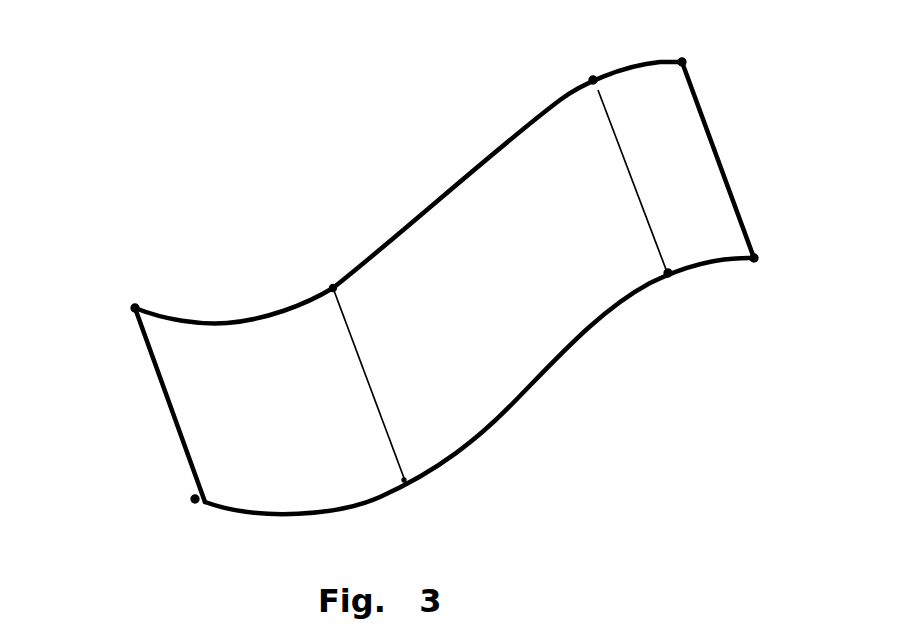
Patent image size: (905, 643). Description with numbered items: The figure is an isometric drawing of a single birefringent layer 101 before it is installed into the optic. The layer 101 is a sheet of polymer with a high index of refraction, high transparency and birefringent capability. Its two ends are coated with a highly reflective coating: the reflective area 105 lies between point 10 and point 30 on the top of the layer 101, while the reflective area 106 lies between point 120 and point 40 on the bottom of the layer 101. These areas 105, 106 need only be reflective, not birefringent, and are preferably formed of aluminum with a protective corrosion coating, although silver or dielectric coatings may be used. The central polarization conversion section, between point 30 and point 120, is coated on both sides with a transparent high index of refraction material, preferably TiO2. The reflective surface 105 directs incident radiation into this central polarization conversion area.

The point 10 is at (128, 305).
The point 40 is at (690, 60).
The point 30 is at (333, 288).
The point 120 is at (593, 80).
The birefringent layer 101 is at (445, 171).
The reflective area 105 is at (222, 458).
The reflective area 106 is at (692, 167).